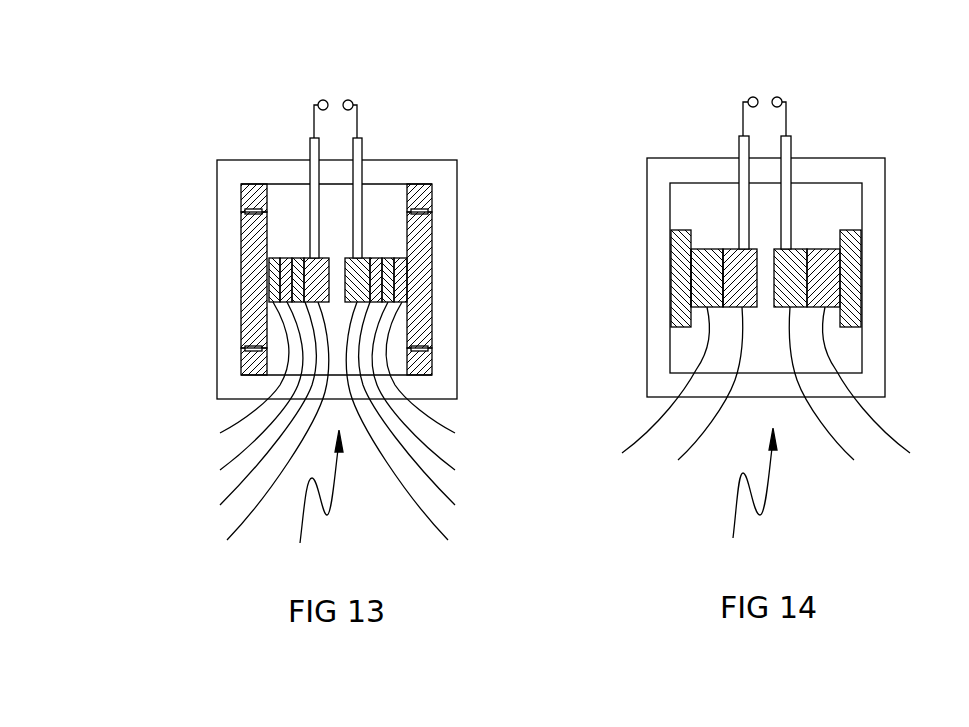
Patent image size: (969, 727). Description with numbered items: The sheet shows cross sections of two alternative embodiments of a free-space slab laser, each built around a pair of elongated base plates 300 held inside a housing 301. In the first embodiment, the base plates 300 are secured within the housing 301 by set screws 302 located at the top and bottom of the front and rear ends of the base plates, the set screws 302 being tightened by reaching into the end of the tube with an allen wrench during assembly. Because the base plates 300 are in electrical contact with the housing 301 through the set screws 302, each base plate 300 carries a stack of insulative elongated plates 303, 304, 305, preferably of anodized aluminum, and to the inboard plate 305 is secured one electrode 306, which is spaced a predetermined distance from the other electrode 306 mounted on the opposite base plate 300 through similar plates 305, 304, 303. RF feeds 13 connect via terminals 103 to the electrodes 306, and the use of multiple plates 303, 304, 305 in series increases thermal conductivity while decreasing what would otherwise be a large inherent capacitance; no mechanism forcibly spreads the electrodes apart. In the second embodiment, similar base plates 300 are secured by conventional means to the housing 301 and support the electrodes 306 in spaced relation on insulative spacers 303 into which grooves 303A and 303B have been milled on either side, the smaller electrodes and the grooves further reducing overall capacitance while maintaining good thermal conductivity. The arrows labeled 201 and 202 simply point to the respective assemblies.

In FIG. 13, the RF feed 13 is at (353, 87).
In FIG. 14, the RF feed 13 is at (782, 84).
In FIG. 13, the terminal 103 is at (357, 146).
In FIG. 14, the terminal 103 is at (788, 142).
In FIG. 13, the electrode assembly 201 is at (307, 504).
In FIG. 14, the electrode assembly 202 is at (744, 502).
In FIG. 13, the base plate 300 is at (248, 289).
In FIG. 14, the base plate 300 is at (675, 287).
In FIG. 13, the housing 301 is at (223, 197).
In FIG. 14, the housing 301 is at (657, 223).
In FIG. 13, the set screw 302 is at (246, 221).
In FIG. 14, the set screw 302 is at (820, 276).
In FIG. 13, the insulative spacer plate 303 is at (339, 380).
In FIG. 14, the insulative spacer plate 303 is at (767, 394).
In FIG. 14, the groove 303A is at (692, 277).
In FIG. 14, the groove 303B is at (722, 249).
In FIG. 13, the insulative spacer plate 304 is at (339, 398).
In FIG. 13, the insulative spacer plate 305 is at (339, 416).
In FIG. 13, the electrode 306 is at (343, 435).
In FIG. 14, the electrode 306 is at (768, 400).